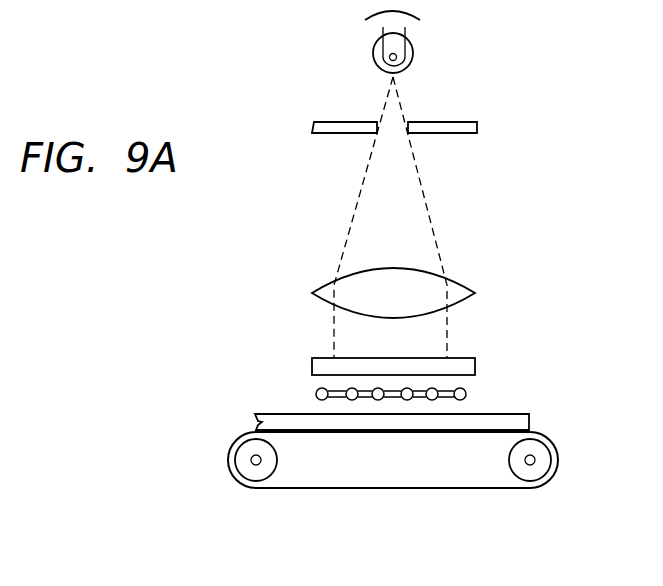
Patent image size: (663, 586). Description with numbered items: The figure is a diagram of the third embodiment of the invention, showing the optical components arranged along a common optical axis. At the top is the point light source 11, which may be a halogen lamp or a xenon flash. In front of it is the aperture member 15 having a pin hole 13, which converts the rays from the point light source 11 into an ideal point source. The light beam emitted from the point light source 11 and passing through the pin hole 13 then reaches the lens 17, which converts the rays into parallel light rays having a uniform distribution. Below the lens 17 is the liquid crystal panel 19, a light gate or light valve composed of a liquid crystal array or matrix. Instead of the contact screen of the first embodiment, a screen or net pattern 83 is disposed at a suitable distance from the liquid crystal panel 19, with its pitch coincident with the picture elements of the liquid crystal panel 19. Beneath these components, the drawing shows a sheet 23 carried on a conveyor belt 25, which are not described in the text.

The point light source 11 is at (405, 47).
The pin hole 13 is at (397, 106).
The aperture member 15 is at (477, 127).
The lens 17 is at (475, 293).
The liquid crystal panel 19 is at (470, 366).
The net pattern 83 is at (466, 393).
The sheet 23 is at (530, 422).
The conveyor belt 25 is at (560, 453).